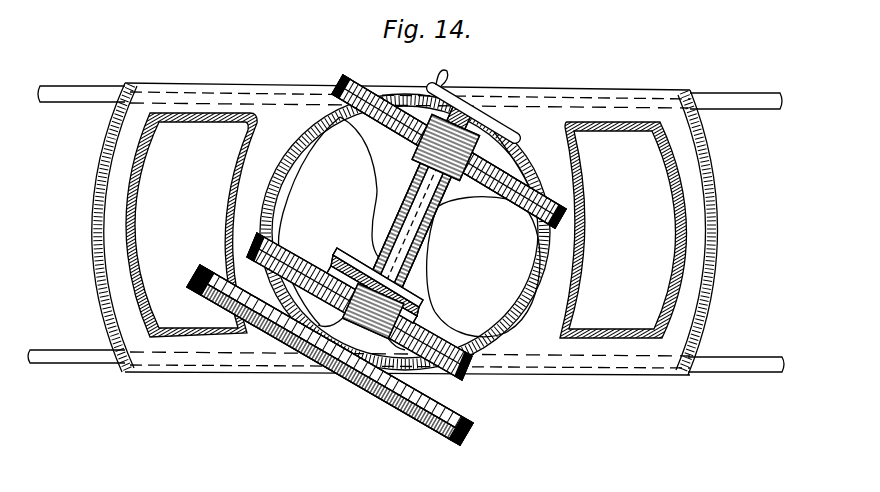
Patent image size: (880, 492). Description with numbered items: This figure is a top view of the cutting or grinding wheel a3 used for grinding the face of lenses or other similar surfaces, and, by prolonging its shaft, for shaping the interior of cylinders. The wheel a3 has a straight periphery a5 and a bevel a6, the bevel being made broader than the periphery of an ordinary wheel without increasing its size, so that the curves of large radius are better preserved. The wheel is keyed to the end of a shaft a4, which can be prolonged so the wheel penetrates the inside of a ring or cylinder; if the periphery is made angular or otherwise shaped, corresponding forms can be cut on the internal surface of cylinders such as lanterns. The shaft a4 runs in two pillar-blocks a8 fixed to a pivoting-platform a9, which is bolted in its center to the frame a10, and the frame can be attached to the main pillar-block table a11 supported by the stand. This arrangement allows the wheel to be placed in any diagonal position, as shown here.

The cutting or grinding wheel a3 is at (359, 306).
The shaft a4 is at (407, 234).
The straight periphery a5 is at (403, 342).
The bevel a6 is at (330, 361).
The pillar-blocks a8 is at (449, 149).
The pivoting-platform a9 is at (405, 232).
The frame a10 is at (405, 229).
The main pillar-block table a11 is at (736, 373).